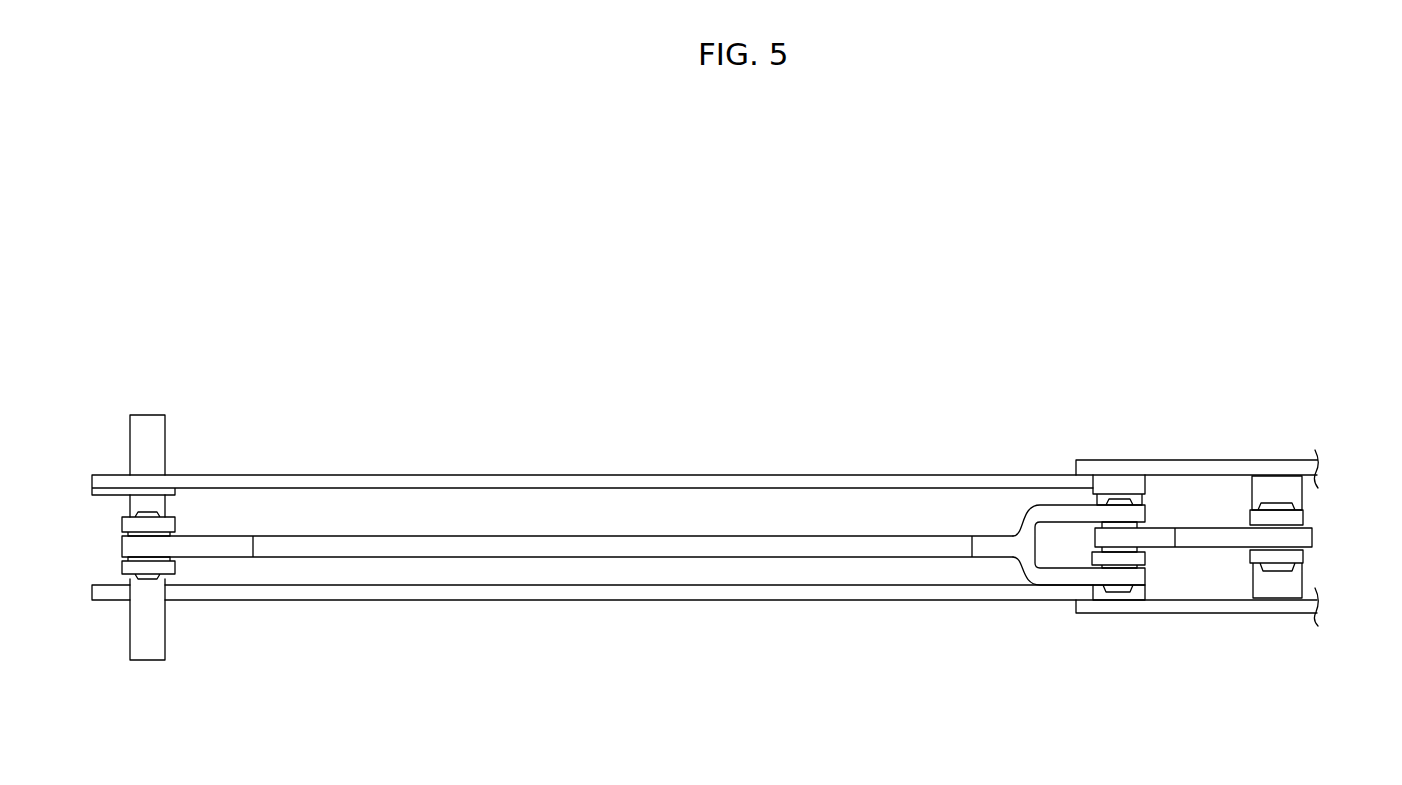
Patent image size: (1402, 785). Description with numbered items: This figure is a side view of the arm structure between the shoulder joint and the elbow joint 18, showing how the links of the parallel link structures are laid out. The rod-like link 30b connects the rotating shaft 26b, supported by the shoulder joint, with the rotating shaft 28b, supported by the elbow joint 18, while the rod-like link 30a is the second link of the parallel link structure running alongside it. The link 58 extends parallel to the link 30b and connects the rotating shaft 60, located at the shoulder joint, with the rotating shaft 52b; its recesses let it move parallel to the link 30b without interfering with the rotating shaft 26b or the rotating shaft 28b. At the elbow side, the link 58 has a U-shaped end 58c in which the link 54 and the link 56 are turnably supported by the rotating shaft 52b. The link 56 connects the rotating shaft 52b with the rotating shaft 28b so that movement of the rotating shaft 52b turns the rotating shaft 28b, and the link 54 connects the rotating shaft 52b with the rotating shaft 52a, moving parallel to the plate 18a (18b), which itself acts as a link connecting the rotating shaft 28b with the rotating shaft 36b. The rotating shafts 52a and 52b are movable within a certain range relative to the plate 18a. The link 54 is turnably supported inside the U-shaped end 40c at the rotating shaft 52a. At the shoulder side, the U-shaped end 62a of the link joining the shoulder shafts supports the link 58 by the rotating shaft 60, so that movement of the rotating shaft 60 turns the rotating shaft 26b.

The elbow joint 18 is at (1197, 539).
The plate 18a is at (1207, 615).
The plate 18b is at (1198, 460).
The rotating shaft 26b is at (147, 473).
The rotating shaft 28b is at (1147, 487).
The link 30a is at (870, 601).
The link 30b is at (870, 476).
The rotating shaft 36b is at (1303, 500).
The end 40c is at (1318, 515).
The rotating shaft 52a is at (1273, 573).
The rotating shaft 52b is at (1118, 592).
The link 54 is at (1220, 527).
The link 56 is at (1147, 559).
The link 58 is at (672, 560).
The end 58c is at (1068, 500).
The rotating shaft 60 is at (148, 580).
The end 62a is at (183, 523).